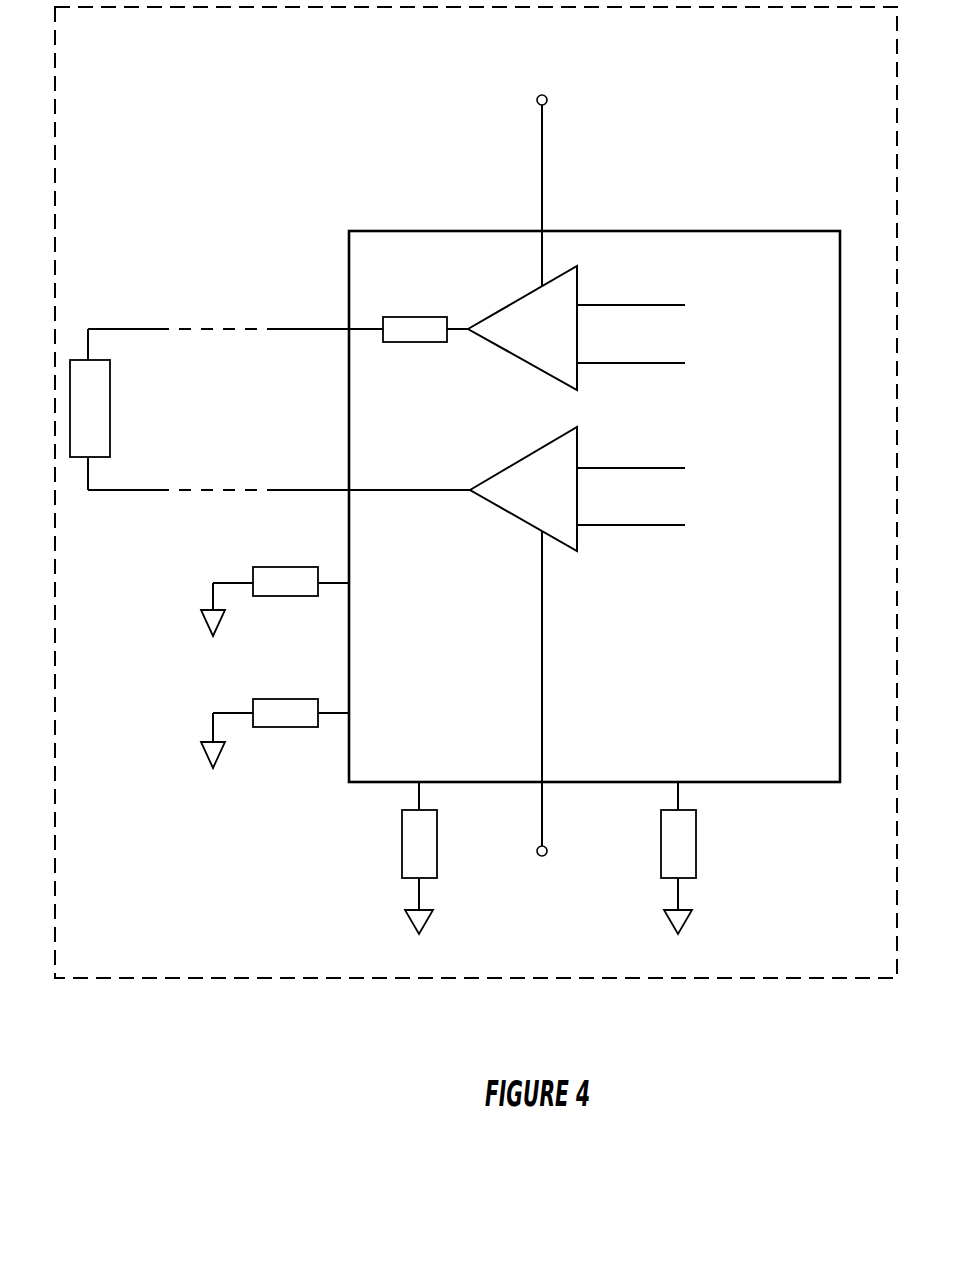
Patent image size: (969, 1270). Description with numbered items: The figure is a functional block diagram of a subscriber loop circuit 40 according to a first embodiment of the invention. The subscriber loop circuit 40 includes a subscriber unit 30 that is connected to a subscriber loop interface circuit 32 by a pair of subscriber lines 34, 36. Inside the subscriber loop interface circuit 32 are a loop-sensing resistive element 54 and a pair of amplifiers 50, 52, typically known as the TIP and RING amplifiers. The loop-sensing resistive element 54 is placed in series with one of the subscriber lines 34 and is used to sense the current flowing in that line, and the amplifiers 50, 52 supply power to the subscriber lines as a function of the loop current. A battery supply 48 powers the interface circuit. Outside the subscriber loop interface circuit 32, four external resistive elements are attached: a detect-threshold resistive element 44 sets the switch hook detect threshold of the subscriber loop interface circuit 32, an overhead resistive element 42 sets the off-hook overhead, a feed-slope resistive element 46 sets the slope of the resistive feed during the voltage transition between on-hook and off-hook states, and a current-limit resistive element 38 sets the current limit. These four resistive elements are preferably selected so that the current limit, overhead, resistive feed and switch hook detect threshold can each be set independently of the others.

The subscriber unit 30 is at (110, 420).
The subscriber loop interface circuit 32 is at (733, 231).
The subscriber line 34 is at (303, 329).
The subscriber line 36 is at (307, 490).
The resistive element Rlim 38 is at (696, 837).
The subscriber loop circuit 40 is at (760, 980).
The resistive element Roh 42 is at (287, 727).
The resistive element Rd 44 is at (291, 596).
The resistive element Rdc 46 is at (437, 840).
The battery supply Vbat 48 is at (548, 98).
The amplifier 50 is at (525, 362).
The amplifier 52 is at (527, 523).
The resistive element Rloop 54 is at (427, 342).